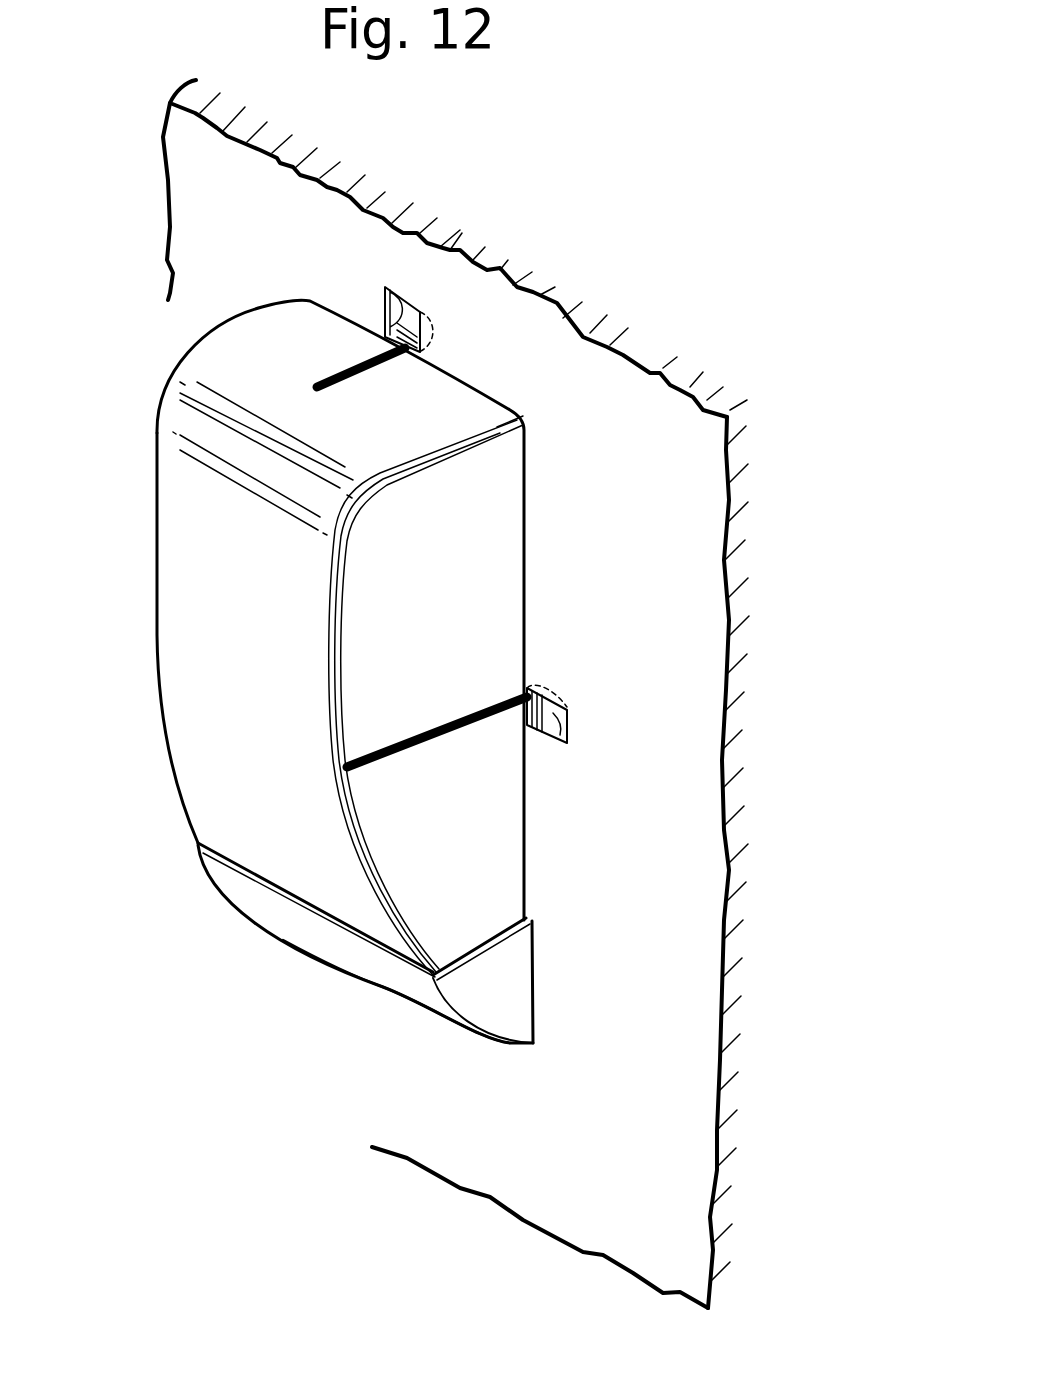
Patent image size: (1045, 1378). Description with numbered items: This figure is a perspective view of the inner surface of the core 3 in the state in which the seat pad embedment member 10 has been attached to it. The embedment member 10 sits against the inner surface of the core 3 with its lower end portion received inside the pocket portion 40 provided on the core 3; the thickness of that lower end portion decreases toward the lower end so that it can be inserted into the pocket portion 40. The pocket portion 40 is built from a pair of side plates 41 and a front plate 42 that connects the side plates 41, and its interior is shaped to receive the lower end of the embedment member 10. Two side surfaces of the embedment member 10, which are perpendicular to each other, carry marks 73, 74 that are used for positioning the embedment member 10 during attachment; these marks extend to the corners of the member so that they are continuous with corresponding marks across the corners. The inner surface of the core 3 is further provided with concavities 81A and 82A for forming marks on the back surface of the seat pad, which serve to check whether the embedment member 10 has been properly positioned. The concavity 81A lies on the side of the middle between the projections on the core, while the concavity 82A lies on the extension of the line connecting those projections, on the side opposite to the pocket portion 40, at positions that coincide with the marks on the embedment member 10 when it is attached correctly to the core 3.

The core 3 is at (648, 397).
The seat pad embedment member 10 is at (188, 569).
The pocket portion 40 is at (360, 965).
The side plate 41 is at (517, 980).
The front plate 42 is at (402, 990).
The mark 73 is at (418, 733).
The mark 74 is at (357, 372).
The concavity 81A is at (570, 720).
The concavity 82A is at (398, 292).